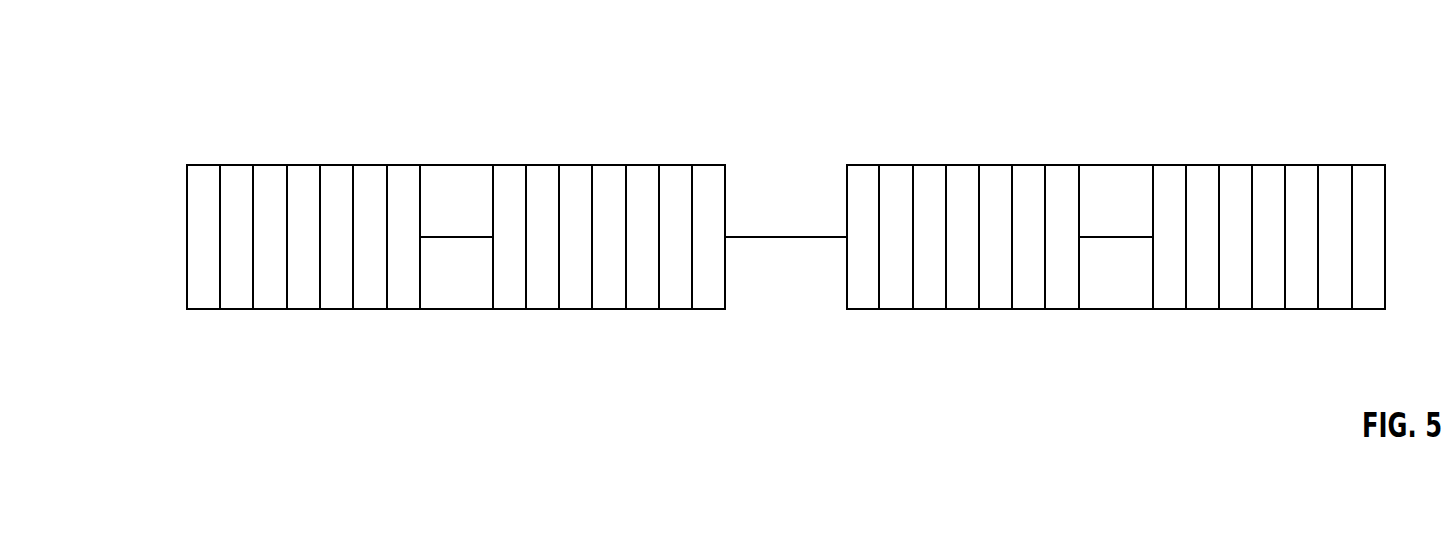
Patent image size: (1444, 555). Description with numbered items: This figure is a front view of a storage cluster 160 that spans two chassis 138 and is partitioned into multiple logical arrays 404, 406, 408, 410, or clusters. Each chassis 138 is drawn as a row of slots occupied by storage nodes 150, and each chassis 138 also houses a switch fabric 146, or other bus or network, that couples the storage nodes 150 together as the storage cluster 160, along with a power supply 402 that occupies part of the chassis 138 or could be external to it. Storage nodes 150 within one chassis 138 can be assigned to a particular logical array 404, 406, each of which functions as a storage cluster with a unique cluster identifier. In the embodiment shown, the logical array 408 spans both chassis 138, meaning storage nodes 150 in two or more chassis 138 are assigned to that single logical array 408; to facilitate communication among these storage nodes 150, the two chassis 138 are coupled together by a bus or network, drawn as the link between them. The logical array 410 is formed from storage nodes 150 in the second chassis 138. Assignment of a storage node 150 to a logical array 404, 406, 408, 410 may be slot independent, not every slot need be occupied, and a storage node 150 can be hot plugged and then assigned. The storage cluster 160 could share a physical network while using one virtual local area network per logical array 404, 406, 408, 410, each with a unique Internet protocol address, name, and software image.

The storage cluster 160 is at (244, 30).
The storage node 150 is at (720, 289).
The chassis 138 is at (455, 165).
The switch fabric 146 is at (478, 216).
The power supply 402 is at (478, 284).
The logical array 404 is at (205, 309).
The logical array 406 is at (580, 165).
The logical array 408 is at (695, 94).
The logical array 410 is at (1252, 63).